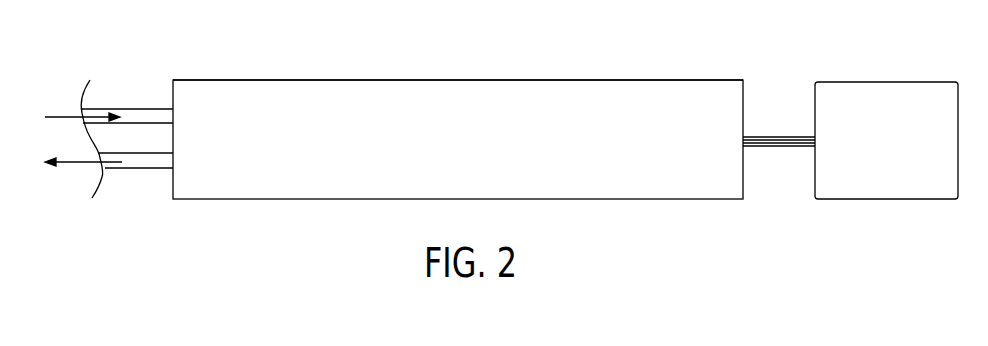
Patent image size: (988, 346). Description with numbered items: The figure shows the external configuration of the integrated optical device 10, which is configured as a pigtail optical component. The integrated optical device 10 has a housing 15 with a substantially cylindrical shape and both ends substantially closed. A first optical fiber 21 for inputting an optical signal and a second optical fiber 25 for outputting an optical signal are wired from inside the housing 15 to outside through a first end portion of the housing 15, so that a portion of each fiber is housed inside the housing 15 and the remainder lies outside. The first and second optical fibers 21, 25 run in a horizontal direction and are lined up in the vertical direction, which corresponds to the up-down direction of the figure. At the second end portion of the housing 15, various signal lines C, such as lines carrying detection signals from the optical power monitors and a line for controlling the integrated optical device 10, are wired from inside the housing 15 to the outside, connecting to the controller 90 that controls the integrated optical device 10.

The integrated optical device 10 is at (429, 80).
The housing 15 is at (630, 79).
The first optical fiber 21 is at (147, 108).
The second optical fiber 25 is at (147, 170).
The signal lines C is at (782, 147).
The controller 90 is at (845, 81).